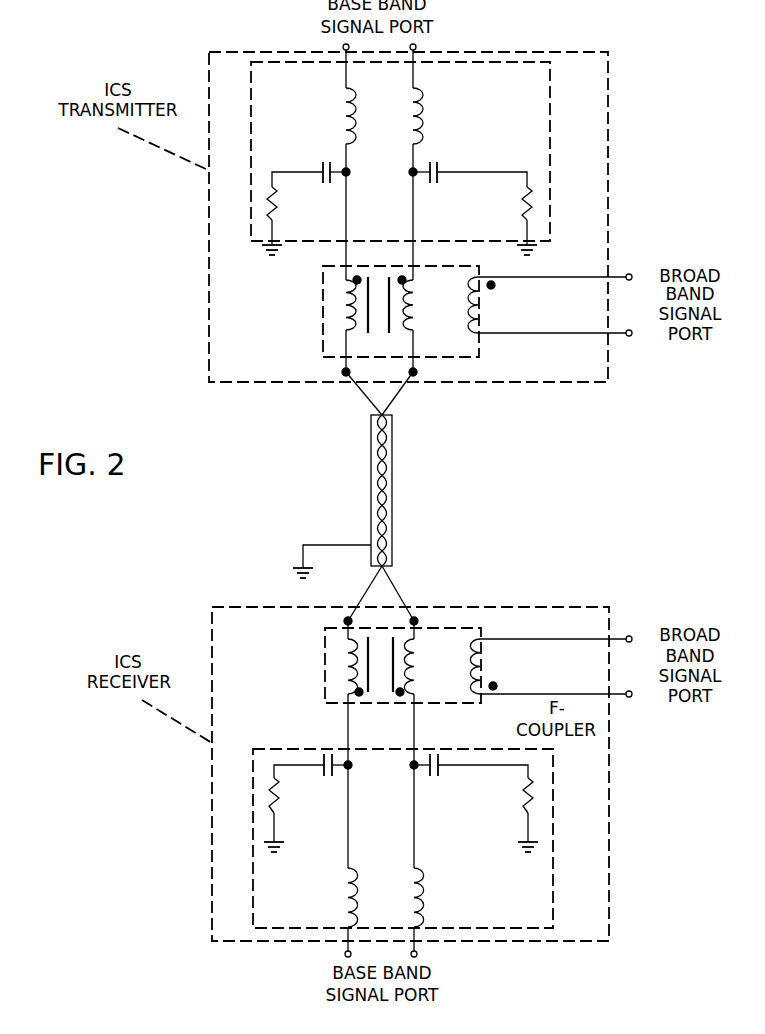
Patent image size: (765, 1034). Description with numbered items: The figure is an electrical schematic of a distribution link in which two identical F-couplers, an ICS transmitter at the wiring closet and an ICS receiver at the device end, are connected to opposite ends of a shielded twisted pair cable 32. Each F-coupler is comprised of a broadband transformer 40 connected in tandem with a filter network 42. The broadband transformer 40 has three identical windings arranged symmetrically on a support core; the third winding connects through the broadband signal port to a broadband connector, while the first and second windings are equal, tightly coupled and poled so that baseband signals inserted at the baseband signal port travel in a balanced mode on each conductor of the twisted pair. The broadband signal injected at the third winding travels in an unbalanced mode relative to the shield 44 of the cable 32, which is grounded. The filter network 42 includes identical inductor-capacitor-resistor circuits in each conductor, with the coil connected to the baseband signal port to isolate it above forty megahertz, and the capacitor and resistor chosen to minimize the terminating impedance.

The shielded twisted pair cable 32 is at (415, 496).
The broadband transformer 40 is at (320, 299).
The filter network 42 is at (307, 243).
The shield 44 is at (375, 472).